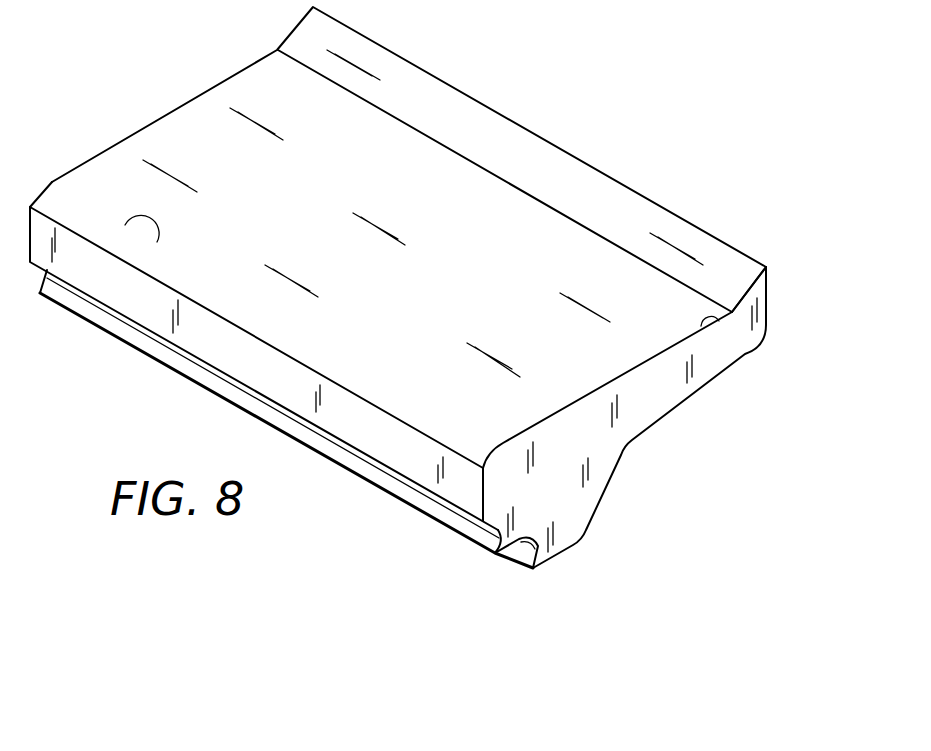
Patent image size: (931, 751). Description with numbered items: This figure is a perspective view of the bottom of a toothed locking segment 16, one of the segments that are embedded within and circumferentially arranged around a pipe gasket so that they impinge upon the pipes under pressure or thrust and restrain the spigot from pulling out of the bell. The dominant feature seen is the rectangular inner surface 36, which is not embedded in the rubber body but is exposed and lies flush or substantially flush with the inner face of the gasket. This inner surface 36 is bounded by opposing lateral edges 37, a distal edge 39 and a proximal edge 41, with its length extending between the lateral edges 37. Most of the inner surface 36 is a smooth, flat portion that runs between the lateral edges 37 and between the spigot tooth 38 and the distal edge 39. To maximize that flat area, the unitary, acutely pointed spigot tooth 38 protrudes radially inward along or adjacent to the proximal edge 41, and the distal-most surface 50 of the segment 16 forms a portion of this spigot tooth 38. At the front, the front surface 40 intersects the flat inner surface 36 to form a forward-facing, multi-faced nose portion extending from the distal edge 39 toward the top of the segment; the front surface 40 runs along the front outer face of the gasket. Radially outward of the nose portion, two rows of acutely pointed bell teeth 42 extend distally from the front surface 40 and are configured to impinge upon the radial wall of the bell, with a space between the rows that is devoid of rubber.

The locking segment 16 is at (141, 88).
The inner surface 36 is at (471, 293).
The lateral edges 37 is at (210, 90).
The spigot tooth 38 is at (728, 267).
The distal edge 39 is at (125, 225).
The front surface 40 is at (382, 480).
The proximal edge 41 is at (523, 127).
The bell teeth 42 is at (493, 555).
The distal-most surface 50 is at (767, 293).